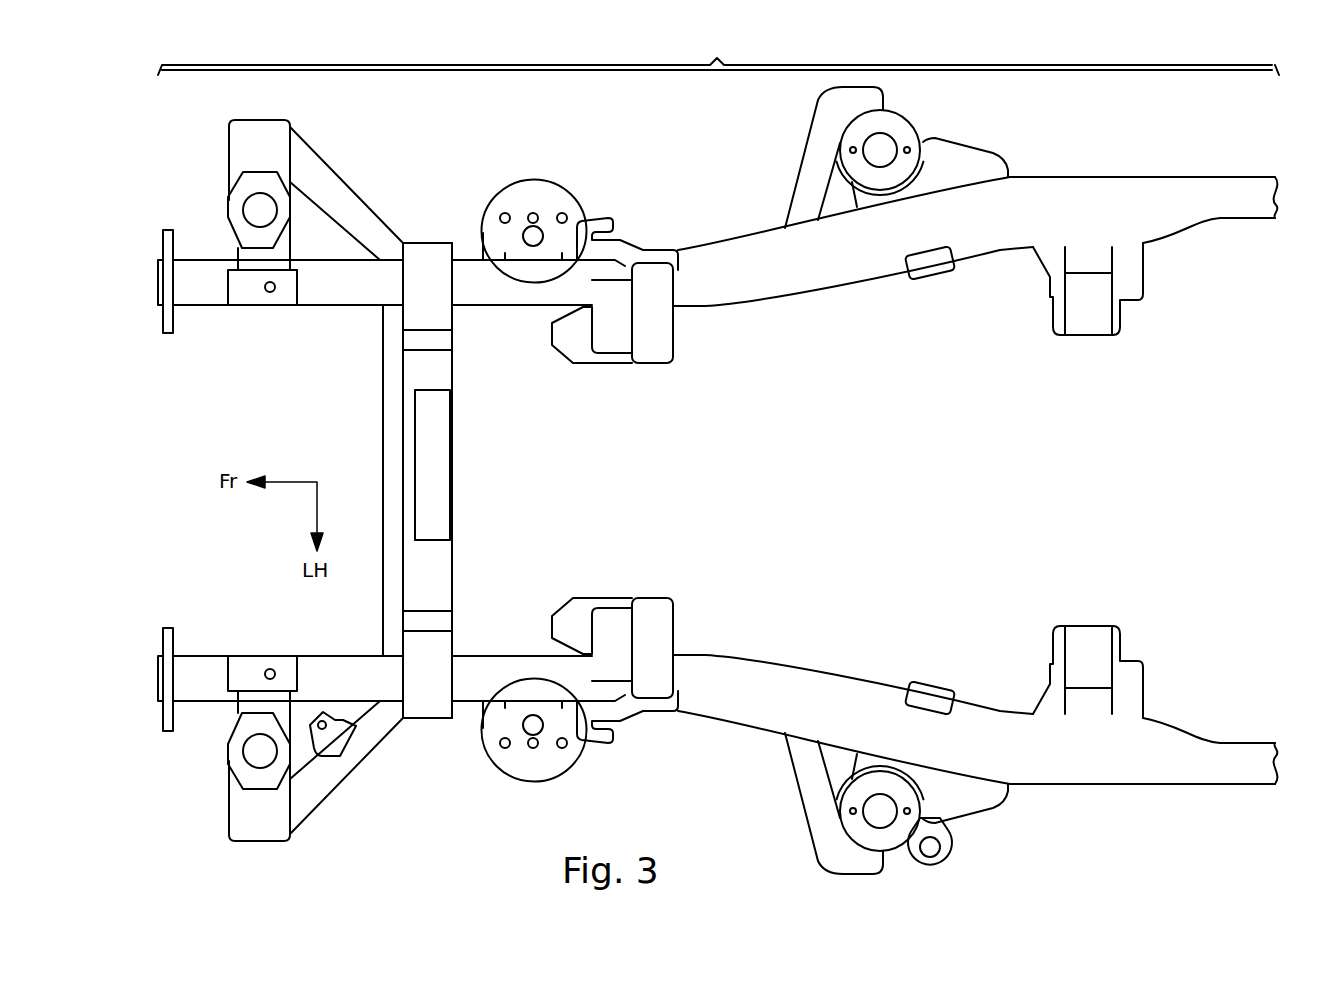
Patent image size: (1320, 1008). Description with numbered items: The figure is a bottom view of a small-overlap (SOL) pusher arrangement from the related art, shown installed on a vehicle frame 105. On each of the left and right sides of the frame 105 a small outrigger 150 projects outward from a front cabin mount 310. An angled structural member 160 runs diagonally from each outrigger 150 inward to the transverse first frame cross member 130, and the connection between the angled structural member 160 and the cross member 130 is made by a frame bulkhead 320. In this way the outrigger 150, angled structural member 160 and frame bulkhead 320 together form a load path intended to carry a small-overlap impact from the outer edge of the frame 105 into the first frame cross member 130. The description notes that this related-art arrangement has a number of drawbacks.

The vehicle frame 105 is at (718, 50).
The No. 1 frame cross member 130 is at (453, 485).
The outrigger 150 is at (228, 153).
The angled structural member 160 is at (343, 182).
The front cabin mount 310 is at (216, 213).
The frame bulkhead 320 is at (412, 241).